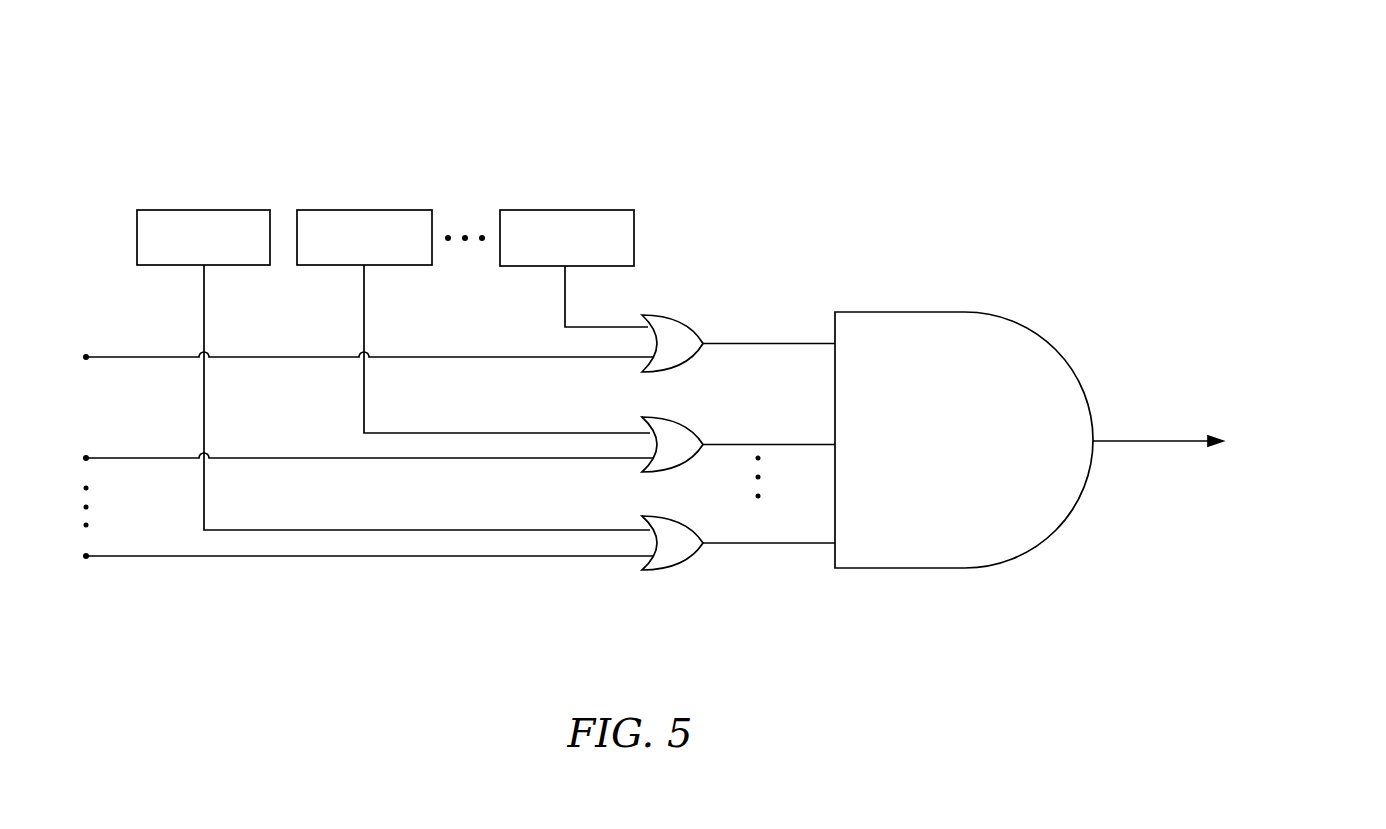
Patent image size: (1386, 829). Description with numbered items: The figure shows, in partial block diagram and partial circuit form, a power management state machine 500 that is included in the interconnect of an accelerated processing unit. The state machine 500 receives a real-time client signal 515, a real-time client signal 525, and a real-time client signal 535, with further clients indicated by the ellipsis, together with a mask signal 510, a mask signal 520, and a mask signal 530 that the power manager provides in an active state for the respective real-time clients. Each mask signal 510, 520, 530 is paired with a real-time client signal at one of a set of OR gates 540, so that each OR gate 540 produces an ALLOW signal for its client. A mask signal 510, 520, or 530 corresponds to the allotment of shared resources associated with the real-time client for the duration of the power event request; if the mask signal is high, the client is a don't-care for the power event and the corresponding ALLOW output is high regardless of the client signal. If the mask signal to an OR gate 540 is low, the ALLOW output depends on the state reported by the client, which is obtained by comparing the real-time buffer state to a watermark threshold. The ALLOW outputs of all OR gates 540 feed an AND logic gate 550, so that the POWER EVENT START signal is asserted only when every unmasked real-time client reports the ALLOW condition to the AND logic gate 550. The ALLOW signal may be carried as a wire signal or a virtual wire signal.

The power management state machine 500 is at (218, 92).
The mask signal 510 is at (210, 210).
The mask signal 520 is at (350, 210).
The mask signal 530 is at (550, 210).
The real-time client signal 515 is at (88, 352).
The real-time client signal 525 is at (88, 453).
The real-time client signal 535 is at (88, 561).
The OR gate 540 is at (662, 315).
The AND logic gate 550 is at (887, 312).